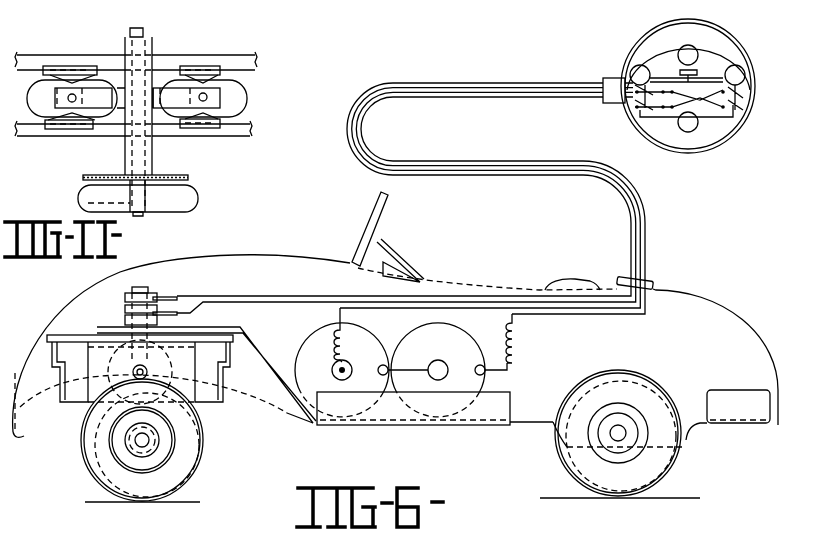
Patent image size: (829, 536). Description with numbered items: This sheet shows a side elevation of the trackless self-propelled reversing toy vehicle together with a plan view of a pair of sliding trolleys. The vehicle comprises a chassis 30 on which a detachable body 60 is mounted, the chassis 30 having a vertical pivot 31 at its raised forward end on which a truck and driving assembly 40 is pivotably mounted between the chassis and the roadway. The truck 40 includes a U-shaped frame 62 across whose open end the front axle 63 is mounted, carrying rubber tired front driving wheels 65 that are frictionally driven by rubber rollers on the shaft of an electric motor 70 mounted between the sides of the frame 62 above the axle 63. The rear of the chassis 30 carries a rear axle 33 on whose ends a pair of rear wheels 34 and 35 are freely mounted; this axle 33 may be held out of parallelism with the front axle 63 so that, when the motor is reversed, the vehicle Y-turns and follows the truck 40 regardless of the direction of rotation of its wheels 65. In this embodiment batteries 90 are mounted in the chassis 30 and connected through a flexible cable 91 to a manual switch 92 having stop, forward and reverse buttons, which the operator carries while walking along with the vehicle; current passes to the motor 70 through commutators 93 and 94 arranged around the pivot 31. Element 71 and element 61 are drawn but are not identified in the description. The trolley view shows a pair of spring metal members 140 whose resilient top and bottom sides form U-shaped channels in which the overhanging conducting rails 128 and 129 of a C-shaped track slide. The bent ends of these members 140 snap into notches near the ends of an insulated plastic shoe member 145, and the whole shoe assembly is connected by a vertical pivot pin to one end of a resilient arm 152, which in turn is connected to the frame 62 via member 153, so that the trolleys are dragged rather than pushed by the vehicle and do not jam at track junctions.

In FIG. 11, the spring metal members 140 is at (72, 66).
In FIG. 11, the member 153 is at (150, 41).
In FIG. 11, the rail 129 is at (253, 62).
In FIG. 11, the rail 128 is at (245, 133).
In FIG. 11, the insulated plastic shoe member 145 is at (37, 83).
In FIG. 11, the resilient arm 152 is at (167, 100).
In FIG. 11, the U-shaped frame 62 is at (112, 175).
In FIG. 11, the front axle 63 is at (143, 214).
In FIG. 6, the manual switch 92 is at (705, 151).
In FIG. 6, the flexible cable 91 is at (615, 207).
In FIG. 6, the detachable body 60 is at (717, 293).
In FIG. 6, the commutator 93 is at (153, 294).
In FIG. 6, the commutator 94 is at (178, 298).
In FIG. 6, the vertical pivot 31 is at (130, 293).
In FIG. 6, the axle housing plate 71 is at (78, 335).
In FIG. 6, the electric motor 70 is at (66, 382).
In FIG. 6, the right axle bracket 61 is at (196, 380).
In FIG. 6, the truck and driving assembly 40 is at (236, 360).
In FIG. 6, the front driving wheel 65 is at (197, 463).
In FIG. 6, the batteries 90 is at (413, 338).
In FIG. 6, the chassis 30 is at (457, 433).
In FIG. 6, the rear axle 33 is at (620, 431).
In FIG. 6, the rear wheel 34 is at (684, 463).
In FIG. 6, the rear wheel 35 is at (652, 473).